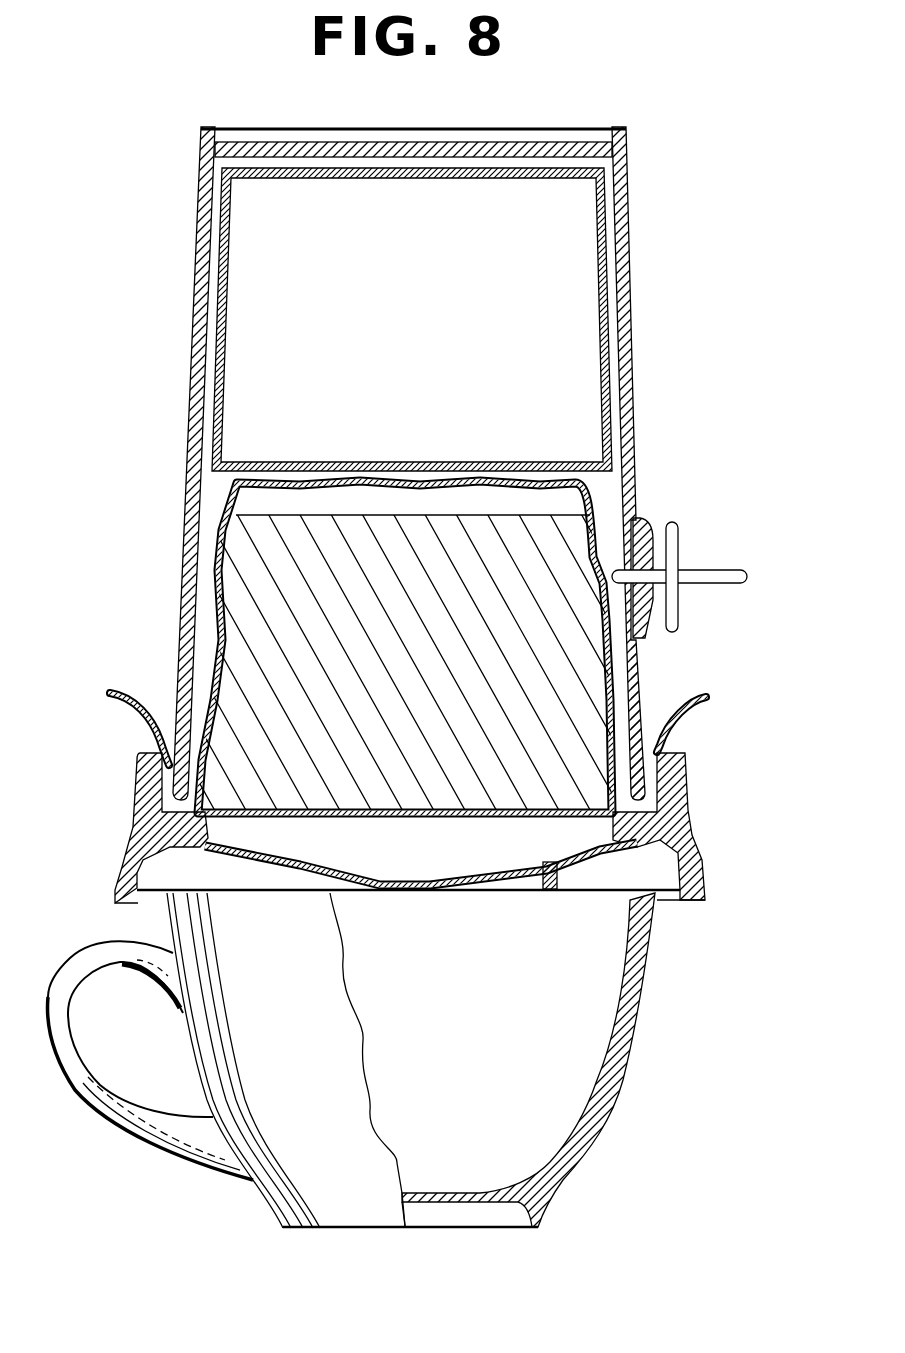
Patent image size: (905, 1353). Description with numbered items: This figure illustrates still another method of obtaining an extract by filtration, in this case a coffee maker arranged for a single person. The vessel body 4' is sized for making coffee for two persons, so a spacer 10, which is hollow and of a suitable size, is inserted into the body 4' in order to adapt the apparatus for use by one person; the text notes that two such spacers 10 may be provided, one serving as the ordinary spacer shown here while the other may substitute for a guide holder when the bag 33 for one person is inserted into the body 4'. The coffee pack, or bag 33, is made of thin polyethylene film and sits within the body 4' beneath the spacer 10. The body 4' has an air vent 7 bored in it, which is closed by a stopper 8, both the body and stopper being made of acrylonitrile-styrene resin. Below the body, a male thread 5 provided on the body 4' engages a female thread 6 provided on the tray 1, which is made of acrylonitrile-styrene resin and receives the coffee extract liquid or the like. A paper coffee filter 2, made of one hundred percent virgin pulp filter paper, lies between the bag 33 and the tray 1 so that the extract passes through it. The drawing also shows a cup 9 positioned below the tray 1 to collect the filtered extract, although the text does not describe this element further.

The vessel body 4' is at (461, 463).
The spacer 10 is at (600, 312).
The air vent 7 is at (640, 523).
The stopper 8 is at (687, 573).
The coffee pack 33 is at (640, 670).
The female thread 6 is at (660, 790).
The male thread 5 is at (687, 812).
The paper coffee filter 2 is at (667, 815).
The tray 1 is at (705, 880).
The cup 9 is at (623, 1053).